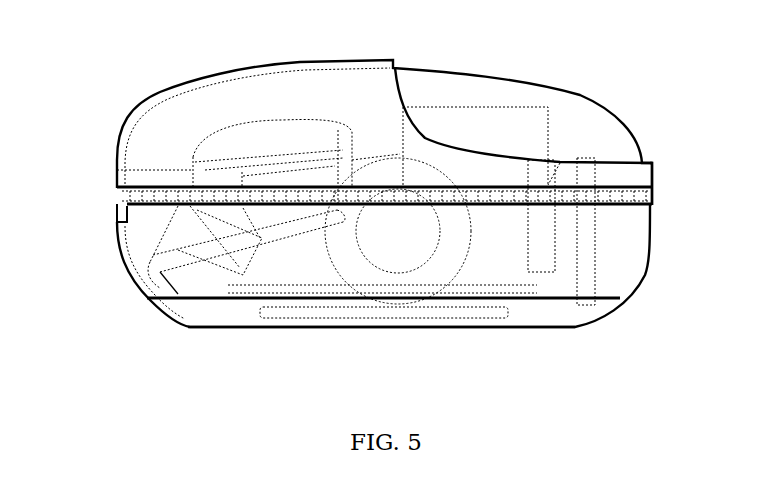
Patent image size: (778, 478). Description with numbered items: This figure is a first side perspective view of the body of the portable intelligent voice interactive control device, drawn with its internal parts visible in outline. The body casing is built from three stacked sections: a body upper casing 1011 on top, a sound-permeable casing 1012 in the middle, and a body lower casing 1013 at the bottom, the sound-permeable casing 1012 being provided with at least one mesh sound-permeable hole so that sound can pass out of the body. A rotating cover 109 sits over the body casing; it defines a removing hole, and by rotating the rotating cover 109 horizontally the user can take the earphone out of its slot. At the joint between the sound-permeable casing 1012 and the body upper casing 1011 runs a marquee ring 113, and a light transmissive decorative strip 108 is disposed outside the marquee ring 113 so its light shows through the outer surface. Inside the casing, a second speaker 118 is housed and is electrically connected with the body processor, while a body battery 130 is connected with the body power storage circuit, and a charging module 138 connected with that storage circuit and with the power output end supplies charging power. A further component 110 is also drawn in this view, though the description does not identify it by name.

The rotating cover 109 is at (197, 125).
The body upper casing 1011 is at (589, 119).
The body battery 130 is at (465, 132).
The marquee ring 113 is at (115, 188).
The light transmissive decorative strip 108 is at (652, 200).
The sound-permeable casing 1012 is at (132, 247).
The body lower casing 1013 is at (165, 313).
The mounting plate 110 is at (300, 288).
The charging module 138 is at (343, 310).
The second speaker 118 is at (450, 262).